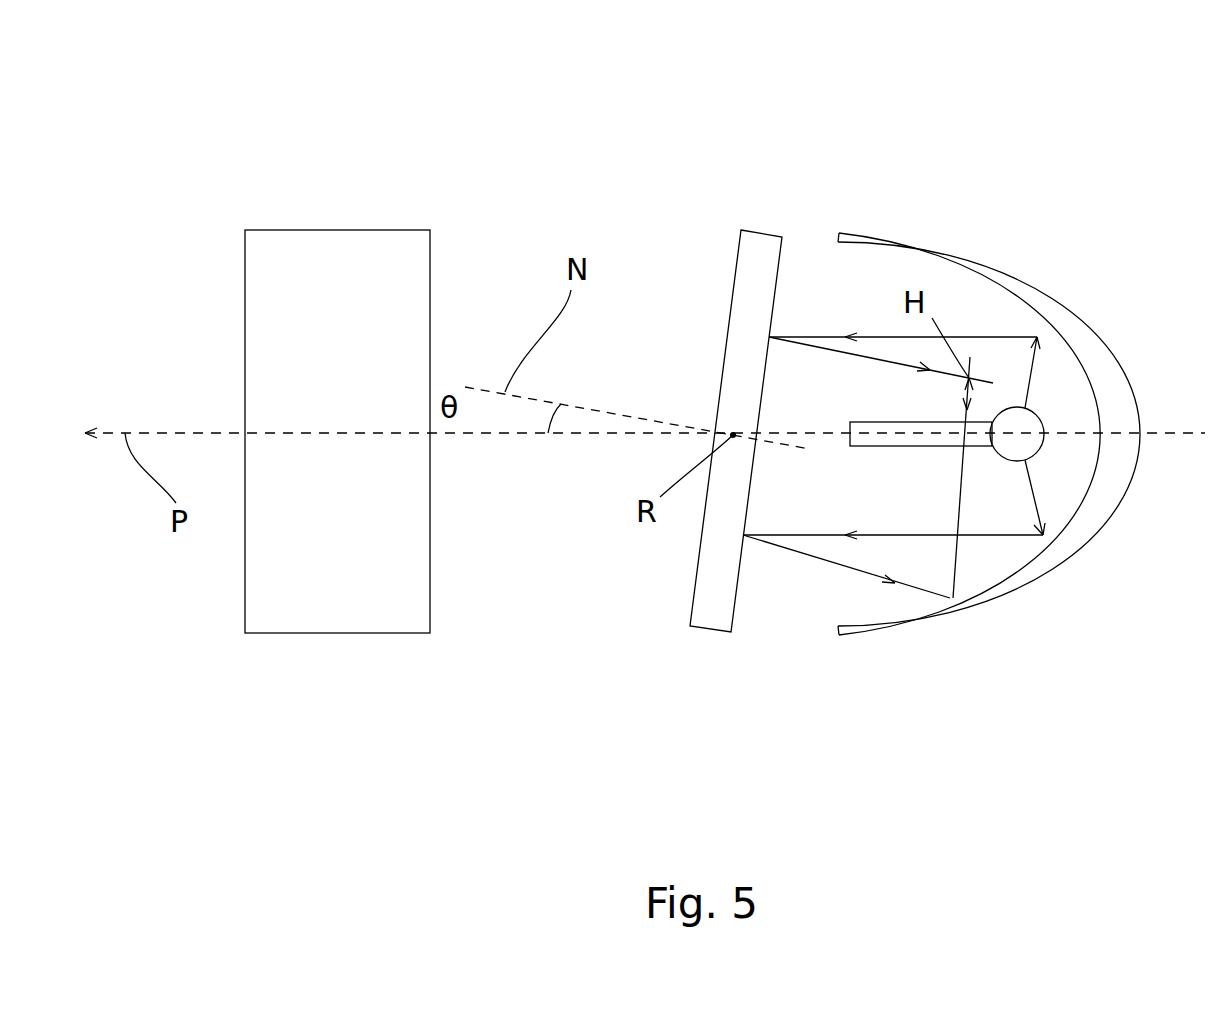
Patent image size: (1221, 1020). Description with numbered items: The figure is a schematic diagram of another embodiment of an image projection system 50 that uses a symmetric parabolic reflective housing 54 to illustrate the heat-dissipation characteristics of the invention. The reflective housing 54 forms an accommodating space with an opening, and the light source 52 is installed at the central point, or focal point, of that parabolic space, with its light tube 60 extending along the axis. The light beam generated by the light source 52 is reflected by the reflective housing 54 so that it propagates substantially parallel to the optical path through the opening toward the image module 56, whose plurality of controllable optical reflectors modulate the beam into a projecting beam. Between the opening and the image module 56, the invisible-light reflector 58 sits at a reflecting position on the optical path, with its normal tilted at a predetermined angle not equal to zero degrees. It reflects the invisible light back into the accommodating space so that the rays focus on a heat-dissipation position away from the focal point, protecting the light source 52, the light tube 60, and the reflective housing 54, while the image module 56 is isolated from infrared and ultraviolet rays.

The image projection system 50 is at (198, 153).
The light source 52 is at (1035, 455).
The reflective housing 54 is at (1060, 337).
The image module 56 is at (355, 398).
The invisible-light reflector 58 is at (713, 633).
The light tube 60 is at (908, 447).